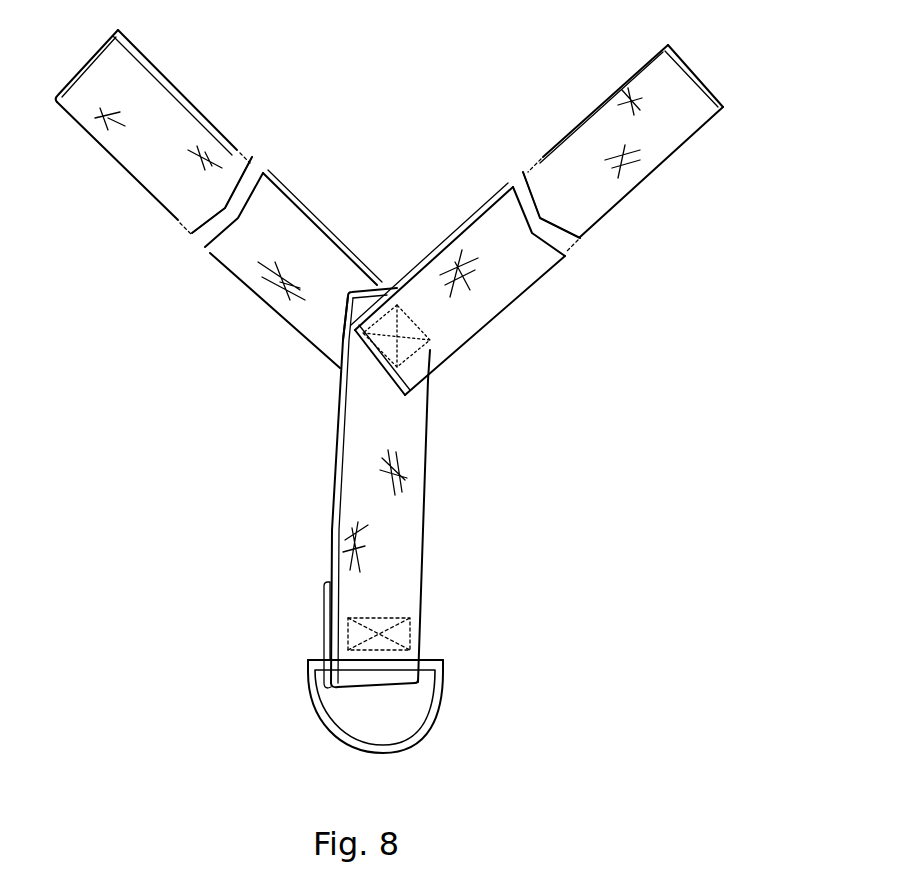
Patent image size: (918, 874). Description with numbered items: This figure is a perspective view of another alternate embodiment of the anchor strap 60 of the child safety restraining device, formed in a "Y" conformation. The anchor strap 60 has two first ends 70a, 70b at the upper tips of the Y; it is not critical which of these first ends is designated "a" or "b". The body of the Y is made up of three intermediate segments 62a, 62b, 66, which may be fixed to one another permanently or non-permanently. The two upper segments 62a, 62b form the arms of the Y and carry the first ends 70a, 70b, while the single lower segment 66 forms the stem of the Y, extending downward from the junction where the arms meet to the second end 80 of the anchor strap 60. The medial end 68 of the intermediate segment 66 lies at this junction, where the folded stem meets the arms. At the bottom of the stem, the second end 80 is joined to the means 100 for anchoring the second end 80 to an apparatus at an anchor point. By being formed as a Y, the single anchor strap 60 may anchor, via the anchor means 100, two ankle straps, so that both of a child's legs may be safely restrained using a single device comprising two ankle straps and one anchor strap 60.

The anchor strap 60 is at (428, 386).
The first end 70a is at (127, 67).
The first end 70b is at (673, 85).
The intermediate segment 62a is at (268, 163).
The intermediate segment 62b is at (542, 149).
The medial end 68 is at (360, 303).
The intermediate segment 66 is at (417, 467).
The second end 80 is at (402, 658).
The means for anchoring 100 is at (450, 710).